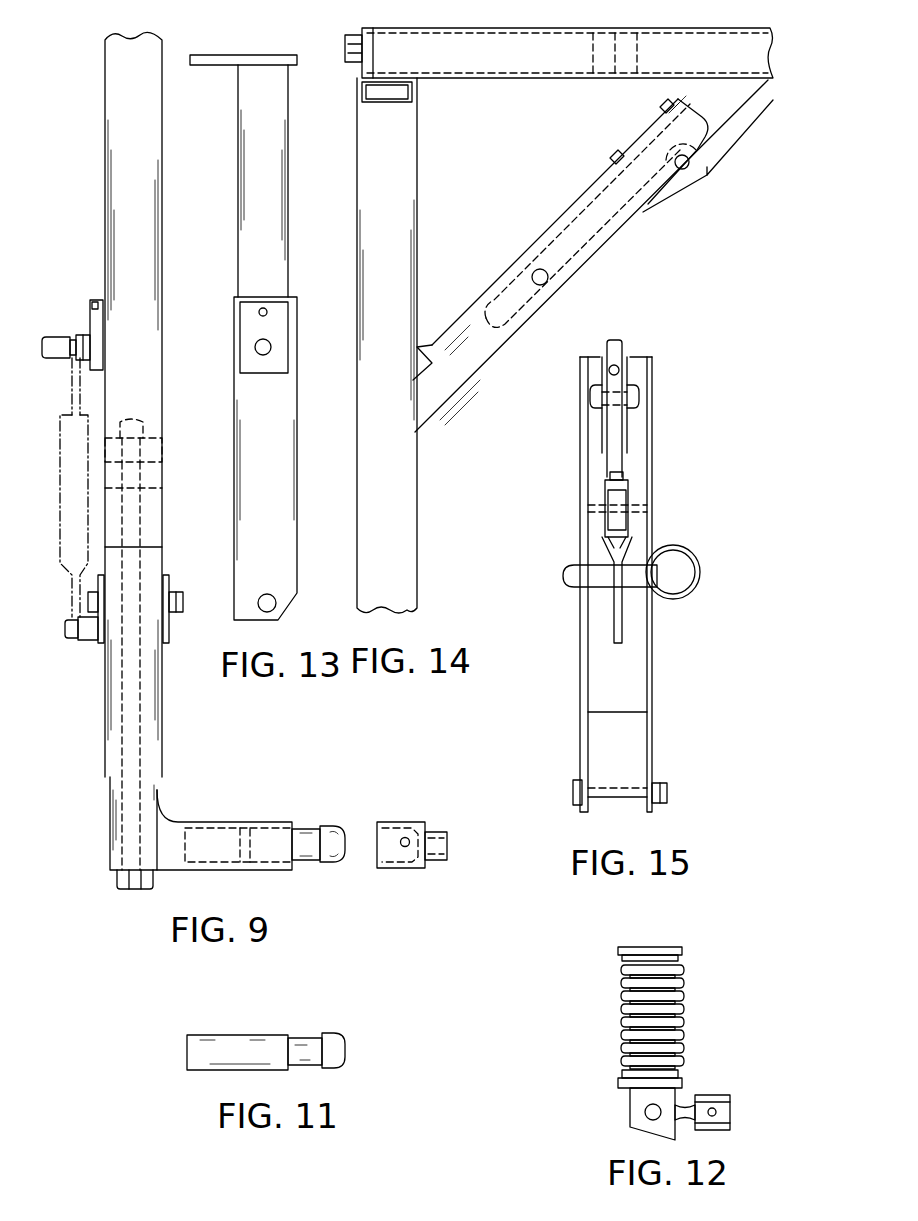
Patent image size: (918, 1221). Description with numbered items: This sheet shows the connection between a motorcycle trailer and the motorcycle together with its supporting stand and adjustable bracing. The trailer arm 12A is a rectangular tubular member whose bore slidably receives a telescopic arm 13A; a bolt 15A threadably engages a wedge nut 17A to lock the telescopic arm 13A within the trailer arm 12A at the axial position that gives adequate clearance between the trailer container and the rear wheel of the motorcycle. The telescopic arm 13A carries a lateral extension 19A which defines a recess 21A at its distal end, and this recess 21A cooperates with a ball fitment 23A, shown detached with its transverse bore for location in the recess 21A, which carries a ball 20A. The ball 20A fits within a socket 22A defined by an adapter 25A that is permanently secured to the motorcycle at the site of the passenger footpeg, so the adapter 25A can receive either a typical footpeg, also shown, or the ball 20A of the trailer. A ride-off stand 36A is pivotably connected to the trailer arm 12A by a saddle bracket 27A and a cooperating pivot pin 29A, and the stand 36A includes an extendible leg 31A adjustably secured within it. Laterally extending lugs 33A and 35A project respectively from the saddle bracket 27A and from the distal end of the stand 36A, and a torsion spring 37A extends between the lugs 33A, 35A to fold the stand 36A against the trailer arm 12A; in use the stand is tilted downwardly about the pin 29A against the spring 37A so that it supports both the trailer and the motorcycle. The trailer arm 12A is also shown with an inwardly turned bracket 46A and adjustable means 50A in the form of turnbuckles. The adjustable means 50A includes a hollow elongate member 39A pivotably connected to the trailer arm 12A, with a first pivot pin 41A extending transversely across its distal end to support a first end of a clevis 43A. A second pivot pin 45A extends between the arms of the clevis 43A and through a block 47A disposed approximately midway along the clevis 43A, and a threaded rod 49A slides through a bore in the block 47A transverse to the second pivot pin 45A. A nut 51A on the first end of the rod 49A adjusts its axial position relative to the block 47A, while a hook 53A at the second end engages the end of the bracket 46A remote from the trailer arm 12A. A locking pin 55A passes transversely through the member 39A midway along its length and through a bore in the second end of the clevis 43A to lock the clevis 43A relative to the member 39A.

In FIG. 9, the trailer arm 12A is at (152, 476).
In FIG. 14, the trailer arm 12A is at (415, 222).
In FIG. 9, the telescopic arm 13A is at (120, 820).
In FIG. 9, the bolt 15A is at (127, 890).
In FIG. 9, the wedge nut 17A is at (155, 448).
In FIG. 9, the lateral extension 19A is at (175, 832).
In FIG. 9, the ball 20A is at (332, 828).
In FIG. 11, the ball 20A is at (332, 1040).
In FIG. 9, the recess 21A is at (262, 830).
In FIG. 9, the socket 22A is at (405, 823).
In FIG. 9, the ball fitment 23A is at (305, 863).
In FIG. 11, the ball fitment 23A is at (228, 1045).
In FIG. 9, the adapter 25A is at (436, 862).
In FIG. 9, the saddle bracket 27A is at (168, 585).
In FIG. 9, the pivot pin 29A is at (185, 607).
In FIG. 13, the extendible leg 31A is at (280, 232).
In FIG. 9, the lug 33A is at (85, 641).
In FIG. 9, the lug 35A is at (60, 337).
In FIG. 13, the ride-off stand 36A is at (297, 390).
In FIG. 9, the torsion spring 37A is at (60, 450).
In FIG. 14, the hollow elongate member 39A is at (497, 348).
In FIG. 14, the first pivot pin 41A is at (665, 152).
In FIG. 15, the first pivot pin 41A is at (640, 400).
In FIG. 14, the clevis 43A is at (636, 218).
In FIG. 15, the second pivot pin 45A is at (640, 506).
In FIG. 14, the bracket 46A is at (548, 80).
In FIG. 15, the block 47A is at (612, 518).
In FIG. 14, the threaded rod 49A is at (692, 180).
In FIG. 15, the threaded rod 49A is at (625, 466).
In FIG. 14, the adjustable means 50A is at (628, 252).
In FIG. 15, the adjustable means 50A is at (572, 468).
In FIG. 15, the nut 51A is at (630, 543).
In FIG. 14, the hook 53A is at (765, 100).
In FIG. 14, the locking pin 55A is at (549, 279).
In FIG. 15, the locking pin 55A is at (692, 592).